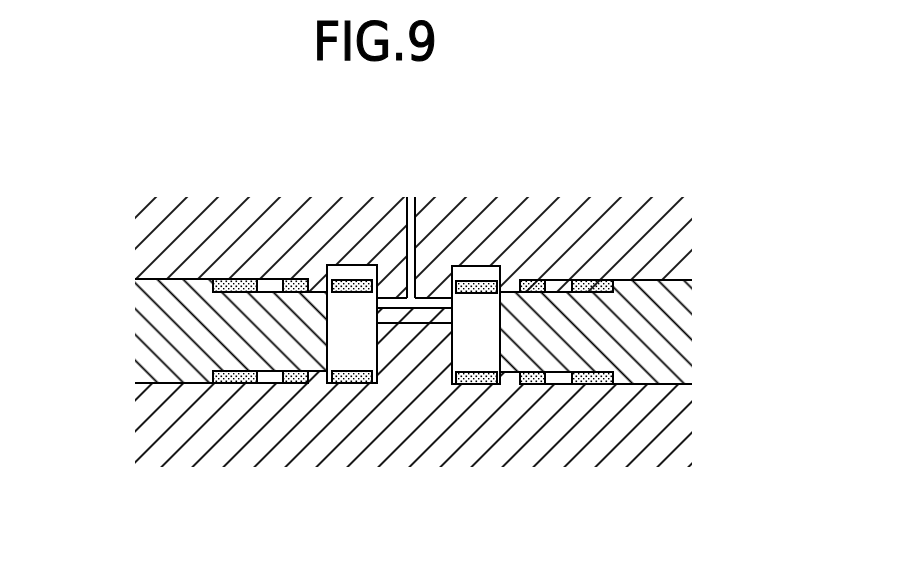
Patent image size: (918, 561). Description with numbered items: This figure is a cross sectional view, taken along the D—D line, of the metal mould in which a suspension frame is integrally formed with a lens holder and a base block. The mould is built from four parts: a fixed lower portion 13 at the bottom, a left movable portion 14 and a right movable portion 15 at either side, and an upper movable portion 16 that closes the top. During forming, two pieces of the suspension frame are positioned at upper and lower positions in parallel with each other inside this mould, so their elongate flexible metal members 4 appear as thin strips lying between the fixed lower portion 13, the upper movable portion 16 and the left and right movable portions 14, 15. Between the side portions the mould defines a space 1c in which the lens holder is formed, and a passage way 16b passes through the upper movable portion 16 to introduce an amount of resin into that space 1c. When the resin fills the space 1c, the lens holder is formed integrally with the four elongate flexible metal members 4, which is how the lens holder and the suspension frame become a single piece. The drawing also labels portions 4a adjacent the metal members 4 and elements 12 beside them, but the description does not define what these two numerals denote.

The space for the formation of the lens holder 1c is at (338, 383).
The elongate flexible metal members 4 is at (296, 280).
The electrode pad 4a is at (355, 280).
The conductive layer 12 is at (240, 280).
The fixed lower portion 13 is at (447, 440).
The left movable portion 14 is at (135, 332).
The right movable portion 15 is at (690, 331).
The upper movable portion 16 is at (382, 204).
The passage way 16b is at (431, 203).